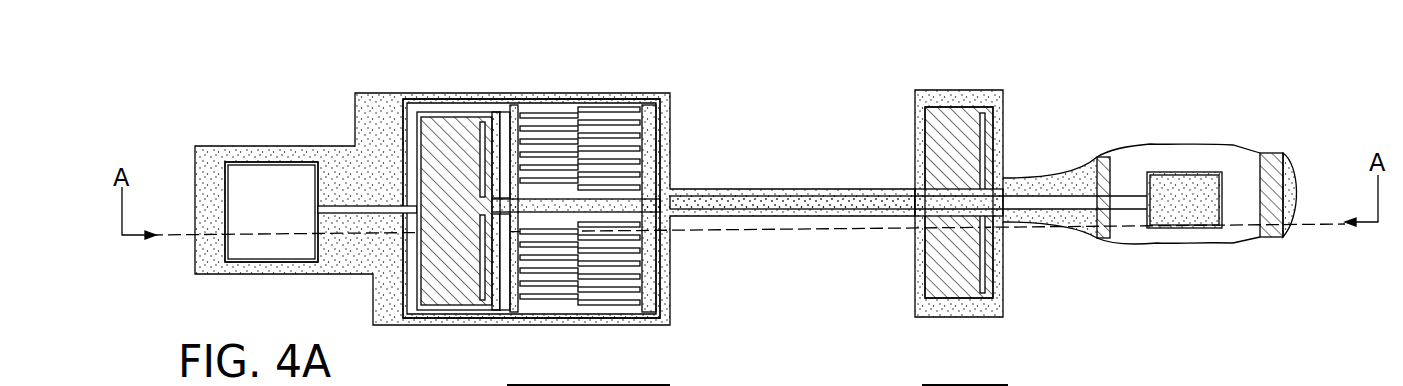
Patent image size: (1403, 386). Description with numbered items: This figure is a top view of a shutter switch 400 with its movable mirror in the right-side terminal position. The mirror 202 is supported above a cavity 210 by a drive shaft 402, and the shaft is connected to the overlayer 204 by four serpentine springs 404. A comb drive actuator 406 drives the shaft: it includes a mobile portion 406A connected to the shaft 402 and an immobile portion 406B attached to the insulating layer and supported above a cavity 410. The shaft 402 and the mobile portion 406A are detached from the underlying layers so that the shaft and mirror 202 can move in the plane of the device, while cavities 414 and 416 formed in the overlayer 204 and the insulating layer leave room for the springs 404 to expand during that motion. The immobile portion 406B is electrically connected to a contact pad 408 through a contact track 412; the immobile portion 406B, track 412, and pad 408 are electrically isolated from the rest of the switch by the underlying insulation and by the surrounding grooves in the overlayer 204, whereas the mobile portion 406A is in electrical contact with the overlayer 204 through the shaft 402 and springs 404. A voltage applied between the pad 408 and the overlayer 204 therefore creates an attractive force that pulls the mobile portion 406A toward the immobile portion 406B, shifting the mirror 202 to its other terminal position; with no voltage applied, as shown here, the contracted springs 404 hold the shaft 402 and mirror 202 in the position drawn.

The shutter switch 400 is at (555, 199).
The drive shaft 402 is at (870, 193).
The serpentine springs 404 is at (480, 163).
The comb drive actuator 406 is at (573, 163).
The mobile portion 406A is at (592, 127).
The immobile portion 406B is at (532, 182).
The contact pad 408 is at (257, 190).
The cavity 410 is at (650, 385).
The contact track 412 is at (377, 202).
The cavity 414 is at (948, 112).
The cavity 416 is at (442, 118).
The mirror 202 is at (1182, 172).
The overlayer 204 is at (380, 142).
The cavity 210 is at (1242, 230).